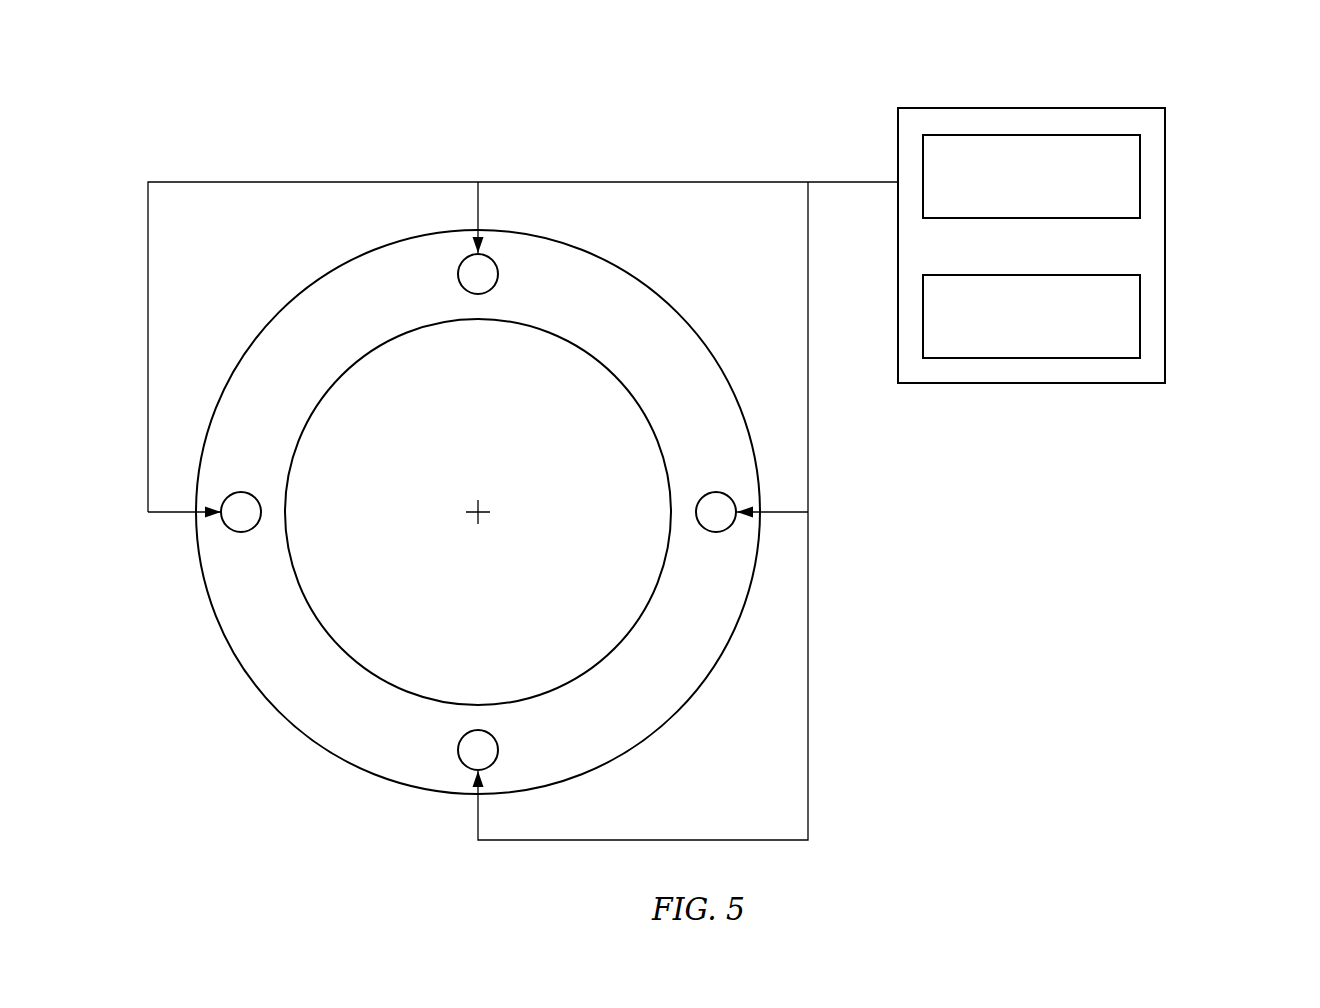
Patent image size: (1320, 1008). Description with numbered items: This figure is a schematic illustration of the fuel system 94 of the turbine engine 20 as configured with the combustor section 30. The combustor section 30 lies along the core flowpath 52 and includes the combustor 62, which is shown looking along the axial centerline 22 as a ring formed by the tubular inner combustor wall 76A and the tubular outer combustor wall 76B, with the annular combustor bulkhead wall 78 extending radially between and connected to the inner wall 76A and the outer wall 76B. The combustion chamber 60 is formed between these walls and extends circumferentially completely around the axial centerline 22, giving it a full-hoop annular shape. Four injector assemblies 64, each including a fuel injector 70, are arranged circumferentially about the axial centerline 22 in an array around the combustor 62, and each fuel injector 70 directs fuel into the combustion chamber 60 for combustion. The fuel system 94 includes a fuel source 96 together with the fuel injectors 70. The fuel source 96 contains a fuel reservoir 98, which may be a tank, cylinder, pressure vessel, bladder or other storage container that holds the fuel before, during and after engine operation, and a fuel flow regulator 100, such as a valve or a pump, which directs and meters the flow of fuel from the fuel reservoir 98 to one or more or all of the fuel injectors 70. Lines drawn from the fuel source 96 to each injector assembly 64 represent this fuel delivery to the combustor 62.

The turbine engine 20 is at (238, 97).
The axial centerline 22 is at (482, 522).
The combustor section 30 is at (618, 227).
The combustor 62 is at (662, 290).
The inner combustor wall 76A is at (645, 417).
The outer combustor wall 76B is at (710, 350).
The combustor bulkhead wall 78 is at (617, 342).
The core flowpath 52 is at (697, 414).
The combustion chamber 60 is at (728, 429).
The injector assembly 64 is at (478, 512).
The fuel injector 70 is at (478, 294).
The fuel system 94 is at (1118, 88).
The fuel source 96 is at (1165, 143).
The fuel reservoir 98 is at (1018, 347).
The fuel flow regulator 100 is at (1011, 207).